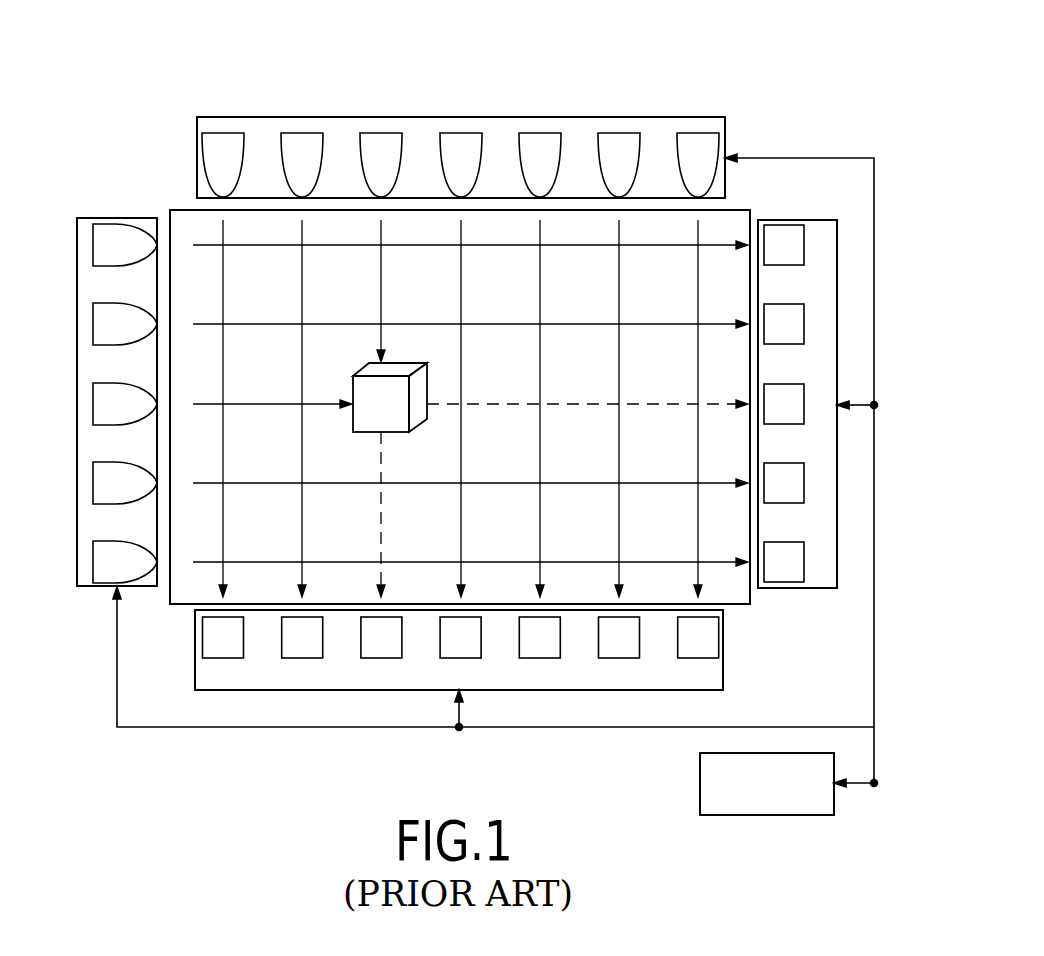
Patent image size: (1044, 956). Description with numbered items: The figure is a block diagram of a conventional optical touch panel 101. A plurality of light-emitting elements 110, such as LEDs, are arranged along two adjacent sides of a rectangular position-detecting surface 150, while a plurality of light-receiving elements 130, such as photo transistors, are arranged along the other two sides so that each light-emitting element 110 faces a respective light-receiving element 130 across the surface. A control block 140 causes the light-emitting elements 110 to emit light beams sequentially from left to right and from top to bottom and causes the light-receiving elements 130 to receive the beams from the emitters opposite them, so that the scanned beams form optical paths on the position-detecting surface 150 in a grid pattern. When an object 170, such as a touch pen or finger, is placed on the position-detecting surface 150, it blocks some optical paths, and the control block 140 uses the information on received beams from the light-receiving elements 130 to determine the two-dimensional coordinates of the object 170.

The optical touch panel 101 is at (916, 126).
The light-emitting elements 110 is at (638, 155).
The light-receiving elements 130 is at (297, 658).
The control block 140 is at (700, 797).
The position-detecting surface 150 is at (183, 210).
The object 170 is at (363, 390).